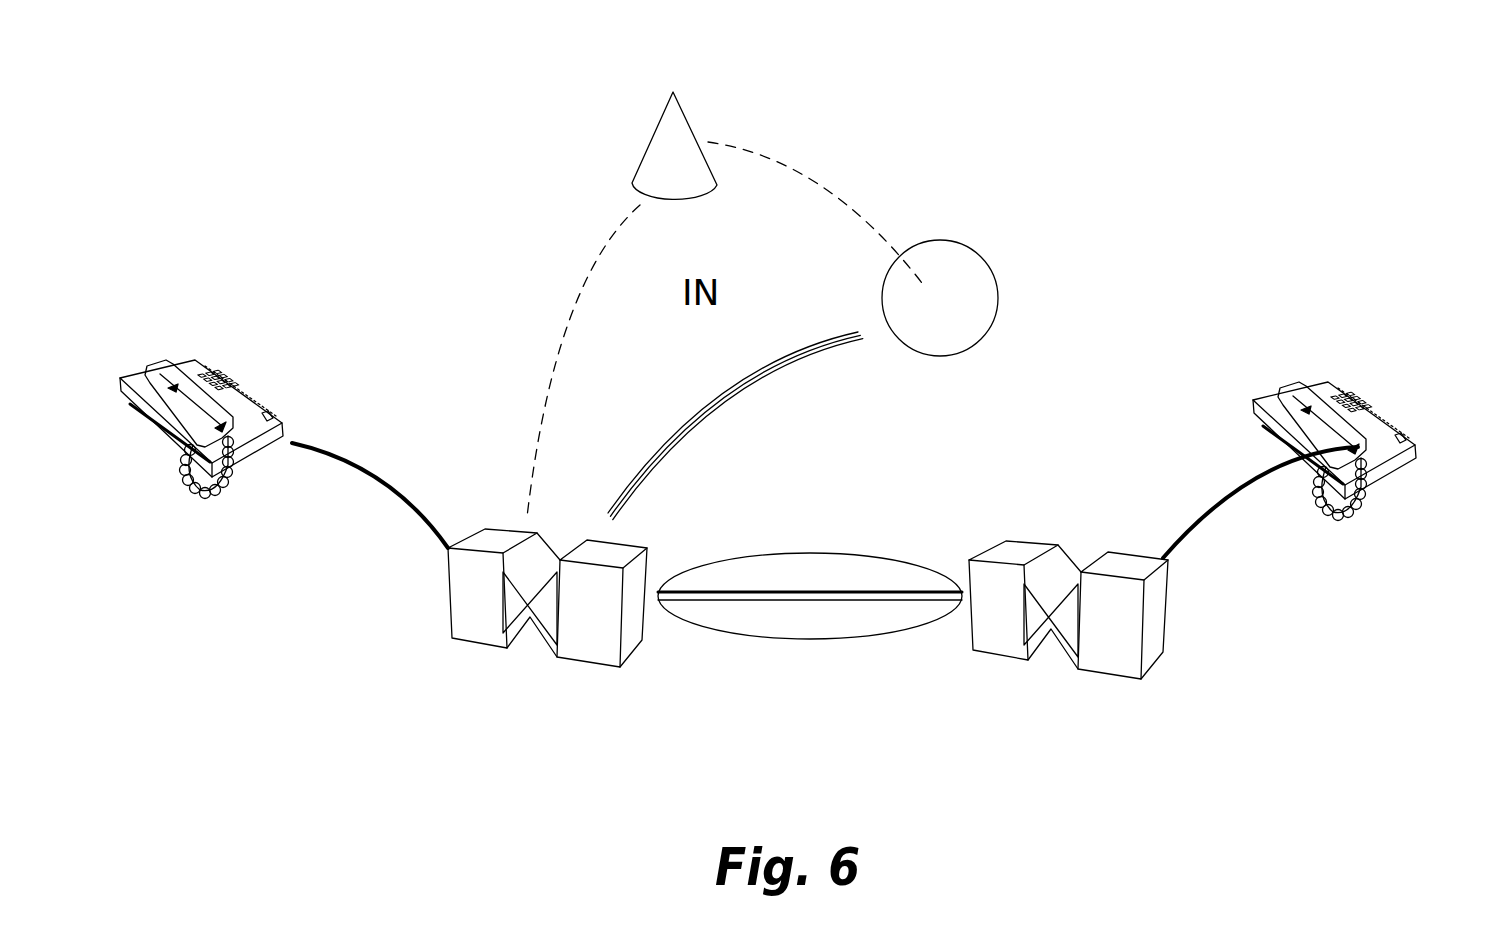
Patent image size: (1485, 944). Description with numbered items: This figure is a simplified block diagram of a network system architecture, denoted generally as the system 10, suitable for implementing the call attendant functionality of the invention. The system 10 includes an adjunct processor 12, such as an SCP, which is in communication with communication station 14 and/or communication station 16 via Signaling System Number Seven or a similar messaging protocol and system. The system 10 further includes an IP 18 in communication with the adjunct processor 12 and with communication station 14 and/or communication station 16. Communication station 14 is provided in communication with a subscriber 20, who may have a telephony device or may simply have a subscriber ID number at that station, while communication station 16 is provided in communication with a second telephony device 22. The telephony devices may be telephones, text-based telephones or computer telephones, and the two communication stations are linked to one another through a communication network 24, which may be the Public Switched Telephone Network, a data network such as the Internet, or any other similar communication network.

The system 10 is at (1262, 190).
The adjunct processor 12 is at (683, 113).
The communication station 14 is at (593, 667).
The communication station 16 is at (1114, 679).
The IP 18 is at (968, 243).
The subscriber 20 is at (197, 358).
The second telephony device 22 is at (1330, 380).
The communication network 24 is at (803, 640).